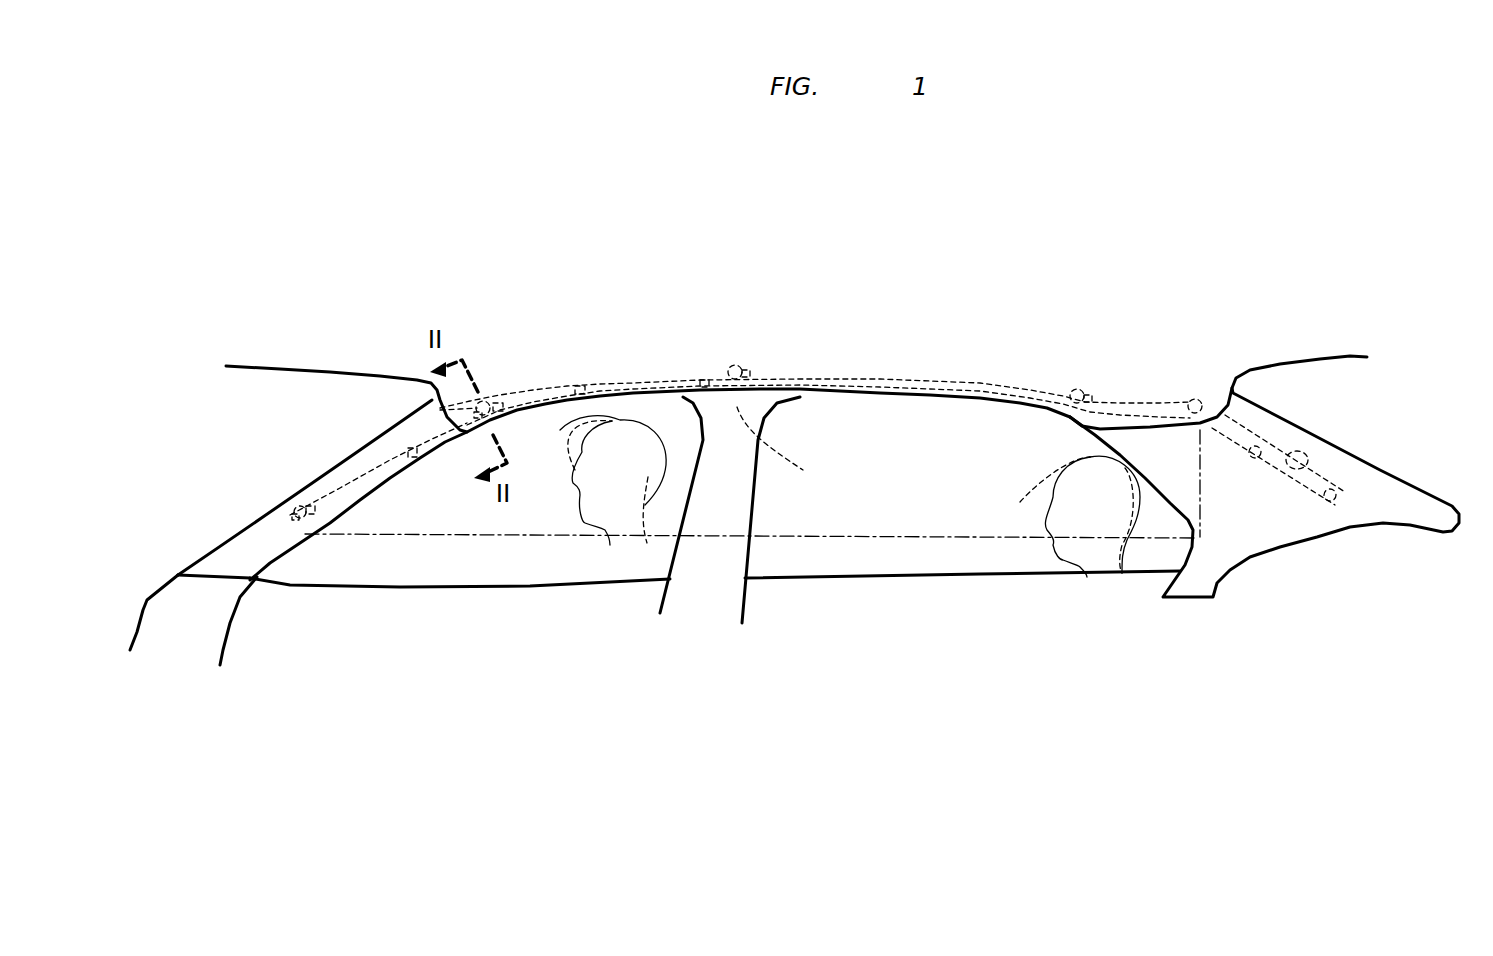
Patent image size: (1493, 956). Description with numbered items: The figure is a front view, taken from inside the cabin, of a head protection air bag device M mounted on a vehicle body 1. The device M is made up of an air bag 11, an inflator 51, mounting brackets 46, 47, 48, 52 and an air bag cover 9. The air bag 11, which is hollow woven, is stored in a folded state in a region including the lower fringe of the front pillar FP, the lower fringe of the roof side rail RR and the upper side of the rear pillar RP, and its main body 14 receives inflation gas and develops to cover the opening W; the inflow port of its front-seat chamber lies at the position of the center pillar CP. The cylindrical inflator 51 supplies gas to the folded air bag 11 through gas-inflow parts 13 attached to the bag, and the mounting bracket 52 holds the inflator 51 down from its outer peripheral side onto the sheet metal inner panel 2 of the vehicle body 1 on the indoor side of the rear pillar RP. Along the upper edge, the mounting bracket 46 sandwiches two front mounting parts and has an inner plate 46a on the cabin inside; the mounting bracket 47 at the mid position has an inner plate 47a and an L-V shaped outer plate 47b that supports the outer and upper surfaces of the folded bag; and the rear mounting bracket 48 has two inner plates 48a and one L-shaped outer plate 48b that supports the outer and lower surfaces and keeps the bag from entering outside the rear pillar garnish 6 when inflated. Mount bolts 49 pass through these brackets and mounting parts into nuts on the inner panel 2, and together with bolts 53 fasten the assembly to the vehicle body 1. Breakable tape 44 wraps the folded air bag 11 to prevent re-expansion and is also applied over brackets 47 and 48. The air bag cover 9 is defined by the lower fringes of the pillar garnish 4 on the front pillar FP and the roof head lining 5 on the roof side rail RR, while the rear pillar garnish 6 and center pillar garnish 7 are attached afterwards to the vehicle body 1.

The vehicle body 1 is at (362, 457).
The inner panel 2 is at (779, 490).
The pillar garnish 4 is at (283, 487).
The roof head lining 5 is at (660, 418).
The rear pillar garnish 6 is at (1266, 437).
The center pillar garnish 7 is at (743, 541).
The air bag cover 9 is at (943, 370).
The air bag 11 is at (665, 484).
The gas-inflow part 13 is at (1387, 523).
The main body 14 is at (953, 523).
The tape 44 is at (505, 400).
The mounting bracket 46 is at (367, 369).
The inner plate 46a is at (487, 403).
The mounting bracket 47 is at (782, 364).
The inner plate 47a is at (782, 364).
The outer plate 47b is at (753, 367).
The mounting bracket 48 is at (1087, 391).
The inner plate 48a is at (1087, 391).
The outer plate 48b is at (1083, 387).
The mount bolt 49 is at (440, 400).
The inflator 51 is at (1295, 504).
The mounting bracket 52 is at (1295, 504).
The bolt 53 is at (1295, 504).
The front pillar FP is at (230, 550).
The center pillar CP is at (720, 527).
The rear pillar RP is at (1266, 437).
The roof side rail RR is at (660, 418).
The opening W is at (487, 570).
The head protection air bag device M is at (1310, 503).